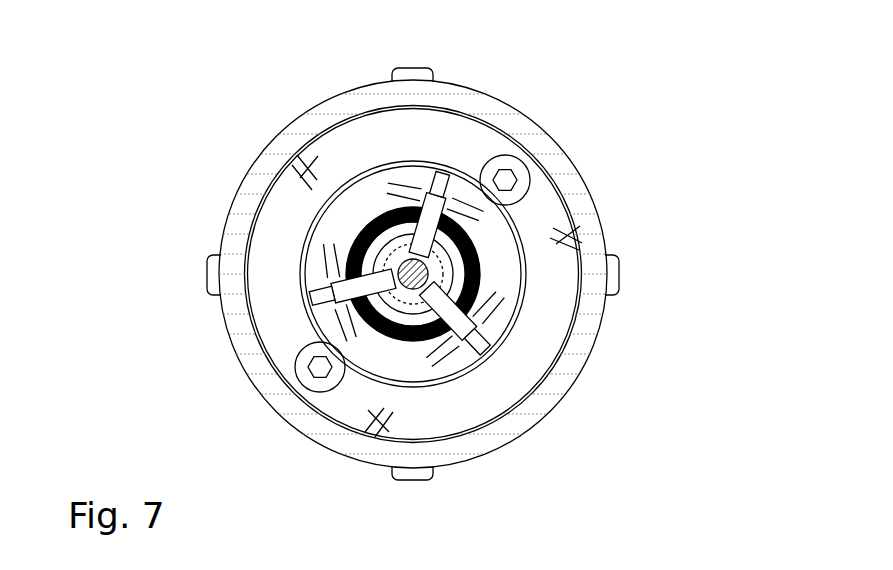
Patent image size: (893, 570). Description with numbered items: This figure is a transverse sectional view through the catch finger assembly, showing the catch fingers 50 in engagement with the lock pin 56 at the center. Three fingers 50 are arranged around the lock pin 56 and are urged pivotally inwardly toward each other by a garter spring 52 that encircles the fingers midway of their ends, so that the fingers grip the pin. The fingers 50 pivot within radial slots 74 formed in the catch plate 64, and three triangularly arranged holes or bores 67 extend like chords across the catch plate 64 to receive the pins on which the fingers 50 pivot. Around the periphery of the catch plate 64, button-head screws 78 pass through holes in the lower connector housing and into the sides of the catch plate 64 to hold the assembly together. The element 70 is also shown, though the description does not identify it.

The catch fingers 50 is at (428, 188).
The garter spring 52 is at (382, 233).
The lock pin 56 is at (400, 263).
The catch plate 64 is at (487, 148).
The holes or bores 67 is at (575, 235).
The fastener 70 is at (515, 178).
The radial slots 74 is at (392, 196).
The button-head screws 78 is at (420, 70).